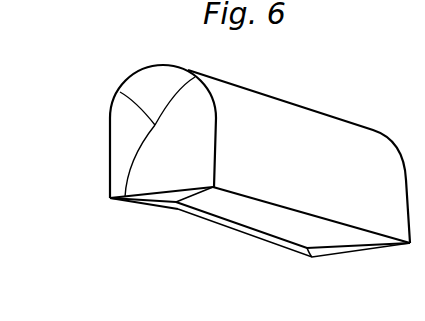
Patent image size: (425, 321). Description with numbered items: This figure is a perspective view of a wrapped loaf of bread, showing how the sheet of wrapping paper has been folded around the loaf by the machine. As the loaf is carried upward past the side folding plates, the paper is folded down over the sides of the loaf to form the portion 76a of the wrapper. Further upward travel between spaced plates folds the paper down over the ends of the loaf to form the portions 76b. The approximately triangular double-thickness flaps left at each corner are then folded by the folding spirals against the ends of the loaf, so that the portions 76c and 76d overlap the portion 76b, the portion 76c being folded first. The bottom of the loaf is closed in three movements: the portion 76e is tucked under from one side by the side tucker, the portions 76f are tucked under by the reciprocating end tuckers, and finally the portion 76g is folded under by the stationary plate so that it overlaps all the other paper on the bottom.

The side portion of the wrapper 76a is at (327, 150).
The end portion of the wrapper 76b is at (155, 82).
The first corner flap portion 76c is at (118, 130).
The second corner flap portion 76d is at (162, 158).
The side bottom tuck portion 76e is at (152, 210).
The end bottom tuck portions 76f is at (175, 198).
The final bottom portion of the wrapper 76g is at (293, 235).